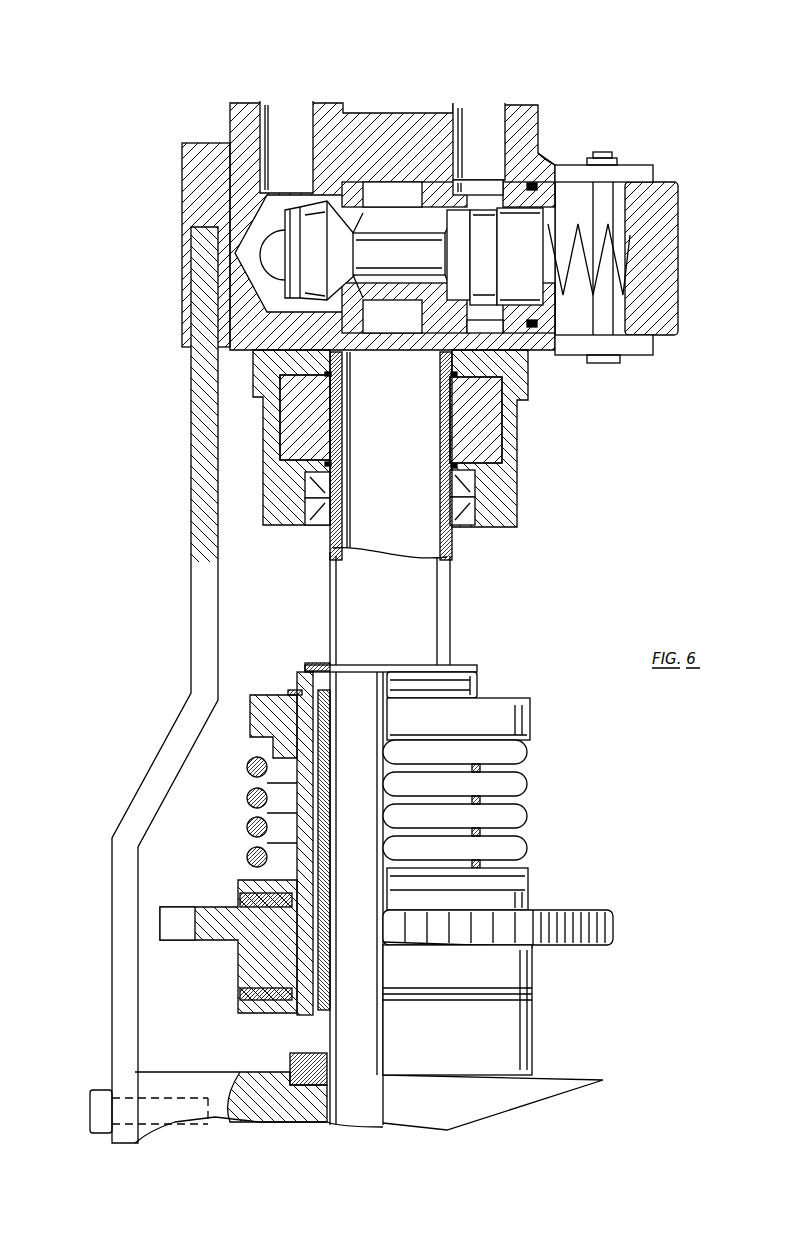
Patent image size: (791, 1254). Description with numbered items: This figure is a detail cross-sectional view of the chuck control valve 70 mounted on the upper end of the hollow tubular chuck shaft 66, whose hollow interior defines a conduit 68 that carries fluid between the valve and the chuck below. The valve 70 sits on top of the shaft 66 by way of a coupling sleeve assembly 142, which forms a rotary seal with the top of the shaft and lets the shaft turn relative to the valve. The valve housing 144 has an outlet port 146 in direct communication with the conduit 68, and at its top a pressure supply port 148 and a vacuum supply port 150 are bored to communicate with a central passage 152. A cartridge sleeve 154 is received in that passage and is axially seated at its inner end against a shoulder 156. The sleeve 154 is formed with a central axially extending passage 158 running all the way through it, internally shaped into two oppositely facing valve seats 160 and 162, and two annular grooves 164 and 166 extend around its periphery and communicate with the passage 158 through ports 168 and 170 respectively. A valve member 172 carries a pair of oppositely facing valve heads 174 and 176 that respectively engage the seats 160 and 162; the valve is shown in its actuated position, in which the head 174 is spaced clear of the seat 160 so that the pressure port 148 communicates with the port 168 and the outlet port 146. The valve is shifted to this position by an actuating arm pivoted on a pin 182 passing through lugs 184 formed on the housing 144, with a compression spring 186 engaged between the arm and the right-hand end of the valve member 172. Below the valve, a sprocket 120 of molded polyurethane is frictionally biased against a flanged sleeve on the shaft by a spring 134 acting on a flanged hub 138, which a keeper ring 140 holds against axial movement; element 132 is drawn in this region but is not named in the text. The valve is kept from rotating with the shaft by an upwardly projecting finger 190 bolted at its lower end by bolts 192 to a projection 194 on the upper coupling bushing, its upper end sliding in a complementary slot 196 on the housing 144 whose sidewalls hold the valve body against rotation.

The hollow tubular chuck shaft 66 is at (425, 606).
The conduit 68 is at (398, 444).
The control valve 70 is at (548, 434).
The sprocket 120 is at (613, 937).
The wires 132 is at (532, 990).
The spring 134 is at (520, 790).
The flanged hub 138 is at (530, 728).
The keeper ring 140 is at (493, 693).
The coupling sleeve assembly 142 is at (500, 500).
The valve housing 144 is at (530, 115).
The outlet port 146 is at (416, 345).
The pressure supply port 148 is at (298, 110).
The vacuum supply port 150 is at (490, 115).
The central passage 152 is at (305, 203).
The cartridge sleeve 154 is at (553, 345).
The shoulder 156 is at (355, 343).
The central axially extending passage 158 is at (433, 223).
The valve seat 160 is at (348, 213).
The valve seat 162 is at (482, 205).
The annular groove 164 is at (372, 182).
The annular groove 166 is at (533, 163).
The port 168 is at (408, 300).
The port 170 is at (487, 290).
The valve member 172 is at (414, 250).
The valve head 174 is at (328, 262).
The valve head 176 is at (488, 240).
The pin 182 is at (600, 158).
The lugs 184 is at (653, 172).
The compression spring 186 is at (655, 265).
The finger 190 is at (191, 621).
The bolts 192 is at (90, 1116).
The projection 194 is at (190, 1120).
The slot 196 is at (182, 190).